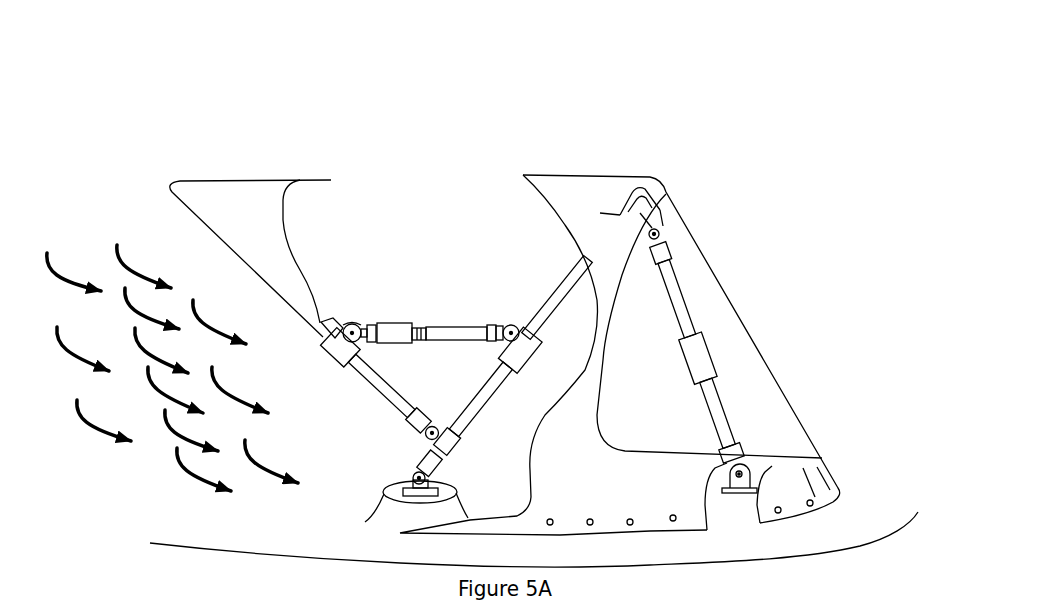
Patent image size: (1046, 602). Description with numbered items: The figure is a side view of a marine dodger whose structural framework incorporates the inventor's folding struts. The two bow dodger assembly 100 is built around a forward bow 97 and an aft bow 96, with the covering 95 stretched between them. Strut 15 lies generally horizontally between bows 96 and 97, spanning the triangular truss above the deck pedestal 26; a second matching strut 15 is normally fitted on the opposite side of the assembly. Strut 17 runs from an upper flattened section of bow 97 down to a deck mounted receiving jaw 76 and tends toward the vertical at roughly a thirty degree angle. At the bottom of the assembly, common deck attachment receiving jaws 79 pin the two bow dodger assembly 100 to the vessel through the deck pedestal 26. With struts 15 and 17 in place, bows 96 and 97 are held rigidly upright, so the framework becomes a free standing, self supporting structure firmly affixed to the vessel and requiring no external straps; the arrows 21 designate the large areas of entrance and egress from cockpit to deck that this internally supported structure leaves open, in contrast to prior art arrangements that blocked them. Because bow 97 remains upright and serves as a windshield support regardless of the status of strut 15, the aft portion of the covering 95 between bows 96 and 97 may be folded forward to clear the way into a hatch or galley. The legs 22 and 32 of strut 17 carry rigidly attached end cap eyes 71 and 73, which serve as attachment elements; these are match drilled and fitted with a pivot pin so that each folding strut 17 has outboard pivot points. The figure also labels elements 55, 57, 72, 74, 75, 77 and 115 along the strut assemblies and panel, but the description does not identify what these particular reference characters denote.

The strut 15 is at (432, 185).
The strut 17 is at (717, 340).
The arrows 21 is at (187, 477).
The leg 22 is at (421, 325).
The deck pedestal 26 is at (534, 557).
The leg 32 is at (457, 341).
The ball joint 55 is at (350, 324).
The ball joint 57 is at (509, 326).
The end cap eye 71 is at (668, 249).
The collar 72 is at (373, 325).
The end cap eye 73 is at (664, 192).
The collar 74 is at (494, 326).
The strut cylinder 75 is at (336, 371).
The deck mounted receiving jaw 76 is at (737, 484).
The connecting rod 77 is at (513, 325).
The deck attachment receiving jaw 79 is at (411, 481).
The covering 95 is at (567, 190).
The bow 96 is at (400, 402).
The bow 97 is at (492, 390).
The two bow dodger assembly 100 is at (666, 161).
The panel 115 is at (767, 387).